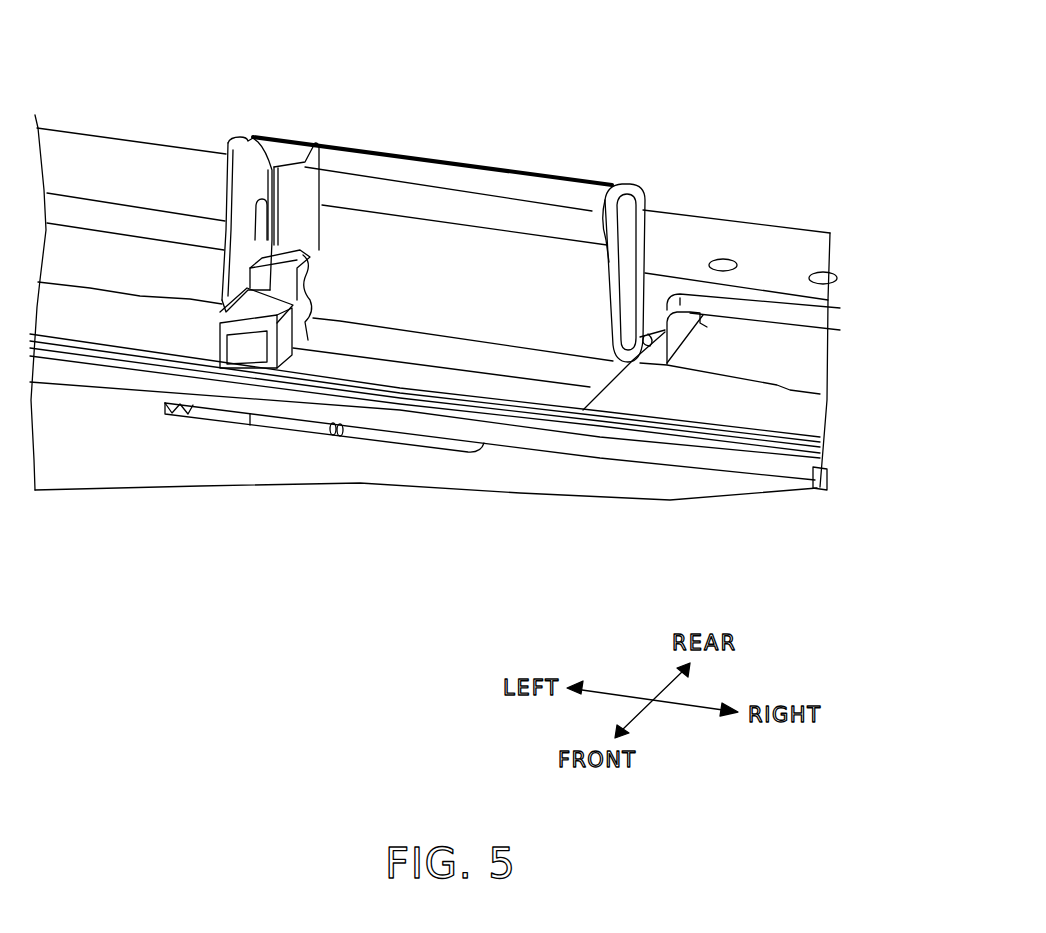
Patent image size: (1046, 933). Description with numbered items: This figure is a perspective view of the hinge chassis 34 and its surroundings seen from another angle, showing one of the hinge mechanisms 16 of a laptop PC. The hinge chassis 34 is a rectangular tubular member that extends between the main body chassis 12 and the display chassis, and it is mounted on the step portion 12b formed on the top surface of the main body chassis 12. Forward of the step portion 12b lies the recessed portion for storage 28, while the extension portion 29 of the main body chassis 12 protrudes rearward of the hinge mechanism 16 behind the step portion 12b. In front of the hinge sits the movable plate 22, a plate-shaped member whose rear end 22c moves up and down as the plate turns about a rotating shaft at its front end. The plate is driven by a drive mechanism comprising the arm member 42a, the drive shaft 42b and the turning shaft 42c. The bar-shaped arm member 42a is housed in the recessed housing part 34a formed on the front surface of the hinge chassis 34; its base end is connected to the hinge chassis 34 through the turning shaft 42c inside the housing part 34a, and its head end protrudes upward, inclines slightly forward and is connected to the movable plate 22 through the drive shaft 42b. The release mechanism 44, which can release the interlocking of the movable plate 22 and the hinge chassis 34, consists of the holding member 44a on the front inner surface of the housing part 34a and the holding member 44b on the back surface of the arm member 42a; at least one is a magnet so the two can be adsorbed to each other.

The main body chassis 12 is at (105, 137).
The step portion 12b is at (690, 393).
The hinge mechanism 16 is at (580, 167).
The movable plate 22 is at (541, 449).
The rear end 22c is at (776, 437).
The recessed portion for storage 28 is at (103, 437).
The extension portion 29 is at (727, 238).
The hinge chassis 34 is at (503, 187).
The housing part 34a is at (287, 222).
The arm member 42a is at (243, 357).
The drive shaft 42b is at (217, 410).
The turning shaft 42c is at (300, 248).
The release mechanism 44 is at (318, 72).
The holding member 44a is at (295, 200).
The holding member 44b is at (238, 297).